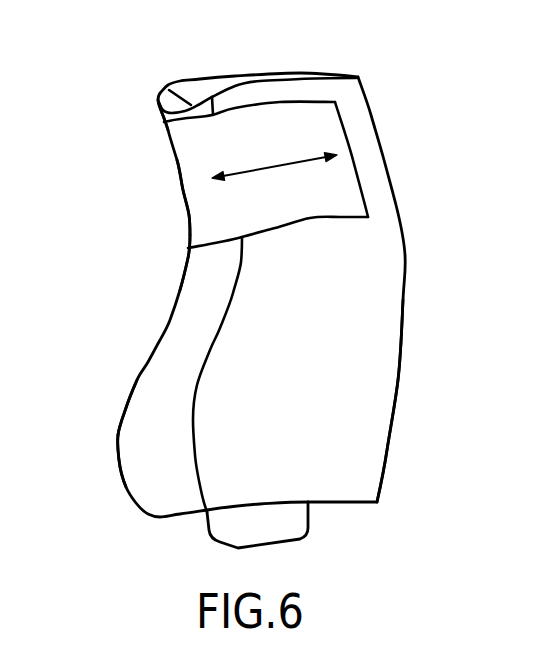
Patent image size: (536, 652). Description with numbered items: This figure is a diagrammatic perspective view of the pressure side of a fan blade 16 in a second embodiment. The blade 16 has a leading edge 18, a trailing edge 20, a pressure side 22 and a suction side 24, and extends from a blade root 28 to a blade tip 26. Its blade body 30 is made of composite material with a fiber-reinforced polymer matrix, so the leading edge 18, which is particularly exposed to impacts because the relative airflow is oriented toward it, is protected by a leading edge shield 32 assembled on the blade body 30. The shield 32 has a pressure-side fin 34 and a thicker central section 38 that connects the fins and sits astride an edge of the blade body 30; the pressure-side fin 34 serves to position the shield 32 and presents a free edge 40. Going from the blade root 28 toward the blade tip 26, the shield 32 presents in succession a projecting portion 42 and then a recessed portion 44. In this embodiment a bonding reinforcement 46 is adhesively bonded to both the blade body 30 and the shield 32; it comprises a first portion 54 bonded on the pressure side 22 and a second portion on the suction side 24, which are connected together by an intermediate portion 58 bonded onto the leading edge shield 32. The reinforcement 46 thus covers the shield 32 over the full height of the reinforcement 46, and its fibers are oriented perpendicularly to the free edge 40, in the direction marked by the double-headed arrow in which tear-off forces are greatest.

The blade 16 is at (97, 99).
The leading edge 18 is at (158, 337).
The trailing edge 20 is at (407, 290).
The pressure side 22 is at (383, 172).
The suction side 24 is at (233, 61).
The blade tip 26 is at (258, 80).
The blade root 28 is at (326, 543).
The blade body 30 is at (365, 415).
The leading edge shield 32 is at (103, 472).
The pressure-side fin 34 is at (199, 101).
The central section 38 is at (166, 97).
The free edge 40 is at (200, 372).
The projecting portion 42 is at (104, 417).
The recessed portion 44 is at (172, 233).
The bonding reinforcement 46 is at (330, 123).
The first portion 54 is at (355, 202).
The intermediate portion 58 is at (192, 187).